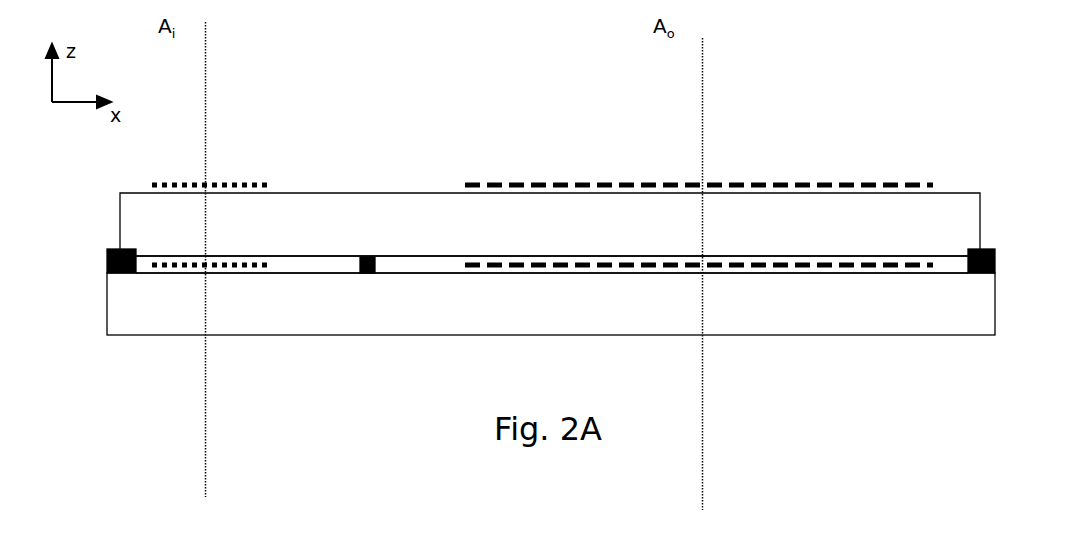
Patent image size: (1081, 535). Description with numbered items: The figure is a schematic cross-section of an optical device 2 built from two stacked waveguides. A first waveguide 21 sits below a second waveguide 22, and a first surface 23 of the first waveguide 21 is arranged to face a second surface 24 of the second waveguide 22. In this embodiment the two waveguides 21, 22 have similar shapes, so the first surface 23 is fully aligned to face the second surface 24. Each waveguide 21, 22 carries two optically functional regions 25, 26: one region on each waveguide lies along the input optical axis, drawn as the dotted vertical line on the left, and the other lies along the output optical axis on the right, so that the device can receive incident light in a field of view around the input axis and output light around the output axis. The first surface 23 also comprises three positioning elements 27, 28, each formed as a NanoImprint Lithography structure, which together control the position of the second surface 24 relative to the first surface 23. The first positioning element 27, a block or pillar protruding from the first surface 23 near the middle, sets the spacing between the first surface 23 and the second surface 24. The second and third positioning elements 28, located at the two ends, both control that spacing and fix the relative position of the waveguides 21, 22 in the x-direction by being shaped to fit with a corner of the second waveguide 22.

The optical device 2 is at (413, 138).
The first waveguide 21 is at (993, 293).
The second waveguide 22 is at (983, 220).
The first surface 23 is at (442, 275).
The second surface 24 is at (430, 255).
The optically functional region 25 is at (222, 267).
The optically functional region 26 is at (248, 183).
The first positioning element 27 is at (360, 258).
The second and third positioning elements 28 is at (107, 262).